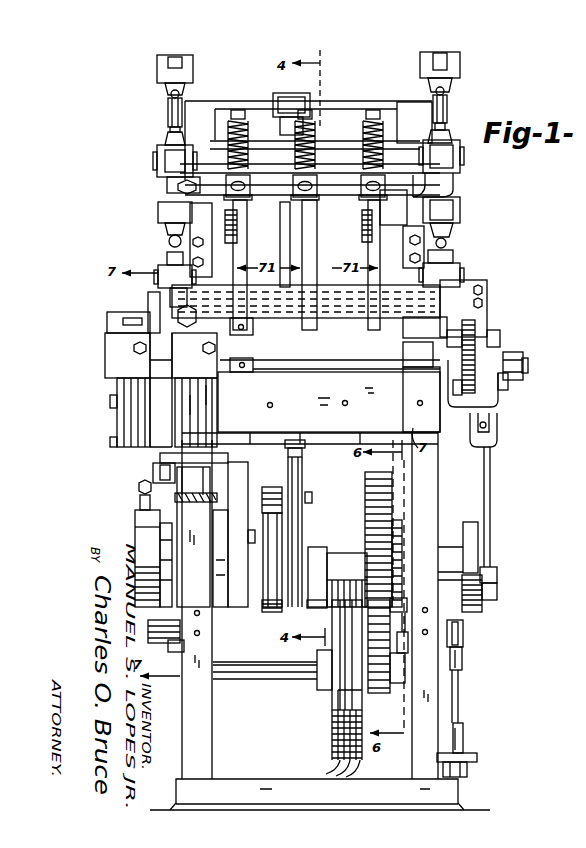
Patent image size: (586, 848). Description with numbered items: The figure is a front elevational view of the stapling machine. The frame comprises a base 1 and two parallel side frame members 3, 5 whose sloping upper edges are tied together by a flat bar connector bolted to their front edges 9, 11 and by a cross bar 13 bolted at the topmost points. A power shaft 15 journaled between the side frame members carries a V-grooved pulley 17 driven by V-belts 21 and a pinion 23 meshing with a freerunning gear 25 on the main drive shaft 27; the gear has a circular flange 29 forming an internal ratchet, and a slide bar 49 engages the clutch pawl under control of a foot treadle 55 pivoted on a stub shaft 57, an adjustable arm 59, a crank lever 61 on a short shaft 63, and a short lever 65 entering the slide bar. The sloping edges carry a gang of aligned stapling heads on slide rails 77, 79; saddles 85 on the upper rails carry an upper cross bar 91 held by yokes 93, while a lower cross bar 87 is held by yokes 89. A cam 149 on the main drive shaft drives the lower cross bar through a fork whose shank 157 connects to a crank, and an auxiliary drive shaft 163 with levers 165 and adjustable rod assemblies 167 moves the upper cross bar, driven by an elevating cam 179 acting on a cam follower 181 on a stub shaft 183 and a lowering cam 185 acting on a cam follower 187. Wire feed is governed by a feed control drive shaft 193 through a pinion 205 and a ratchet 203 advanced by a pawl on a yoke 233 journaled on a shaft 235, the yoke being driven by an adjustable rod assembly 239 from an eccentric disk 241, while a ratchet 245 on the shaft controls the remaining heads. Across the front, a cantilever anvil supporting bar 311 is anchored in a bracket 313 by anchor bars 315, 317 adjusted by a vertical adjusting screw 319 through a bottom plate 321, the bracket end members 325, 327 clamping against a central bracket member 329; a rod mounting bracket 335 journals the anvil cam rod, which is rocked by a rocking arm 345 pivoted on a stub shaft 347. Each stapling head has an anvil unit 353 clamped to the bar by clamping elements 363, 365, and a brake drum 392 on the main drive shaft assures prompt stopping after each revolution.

The base 1 is at (265, 783).
The side frame member 3 is at (432, 470).
The side frame member 5 is at (183, 731).
The front edge 9 is at (432, 502).
The front edge 11 is at (182, 693).
The cross bar 13 is at (340, 101).
The power shaft 15 is at (257, 672).
The pulley 17 is at (332, 714).
The V-belts 21 is at (328, 769).
The pinion 23 is at (383, 688).
The freerunning gear 25 is at (367, 493).
The main drive shaft 27 is at (347, 560).
The circular flange 29 is at (393, 537).
The slide bar 49 is at (410, 602).
The foot treadle 55 is at (472, 753).
The stub shaft 57 is at (460, 777).
The adjustable arm 59 is at (460, 702).
The crank lever 61 is at (465, 627).
The short shaft 63 is at (465, 650).
The short lever 65 is at (408, 640).
The slide rail 77 is at (203, 262).
The slide rail 79 is at (197, 232).
The saddle 85 is at (458, 198).
The cross bar 87 is at (327, 287).
The yoke 89 is at (412, 307).
The cross bar 91 is at (338, 192).
The yoke 93 is at (170, 178).
The cam 149 is at (223, 560).
The shank 157 is at (235, 473).
The auxiliary drive shaft 163 is at (356, 118).
The lever 165 is at (173, 55).
The adjustable rod assembly 167 is at (168, 112).
The cam 179 is at (273, 620).
The cam follower 181 is at (273, 490).
The stub shaft 183 is at (283, 490).
The cam 185 is at (317, 557).
The cam follower 187 is at (310, 604).
The feed control drive shaft 193 is at (500, 337).
The ratchet 203 is at (455, 392).
The pinion 205 is at (472, 323).
The yoke 233 is at (502, 407).
The shaft 235 is at (528, 368).
The adjustable rod assembly 239 is at (490, 490).
The disk 241 is at (472, 533).
The ratchet 245 is at (508, 387).
The anvil supporting bar 311 is at (300, 364).
The bracket 313 is at (218, 422).
The anchor bar 315 is at (218, 382).
The anchor bar 317 is at (120, 385).
The vertical adjusting screw 319 is at (193, 502).
The bottom plate 321 is at (160, 462).
The bracket end member 325 is at (218, 405).
The bracket end member 327 is at (125, 419).
The central bracket member 329 is at (160, 420).
The rod mounting bracket 335 is at (135, 312).
The rocking arm 345 is at (172, 618).
The stub shaft 347 is at (172, 650).
The anvil unit 353 is at (227, 325).
The clamping element 363 is at (249, 330).
The clamping element 365 is at (253, 350).
The brake drum 392 is at (132, 537).